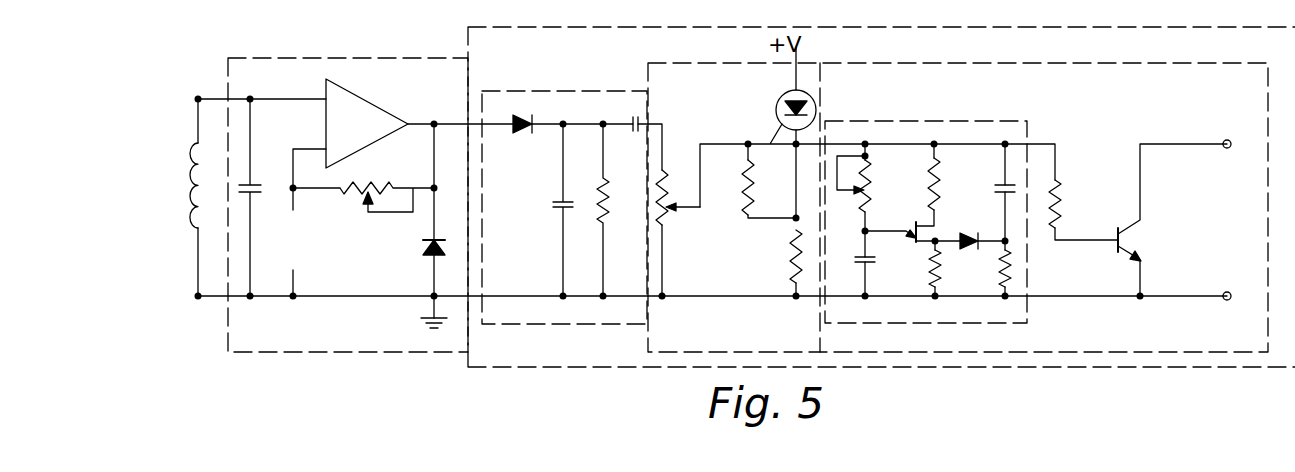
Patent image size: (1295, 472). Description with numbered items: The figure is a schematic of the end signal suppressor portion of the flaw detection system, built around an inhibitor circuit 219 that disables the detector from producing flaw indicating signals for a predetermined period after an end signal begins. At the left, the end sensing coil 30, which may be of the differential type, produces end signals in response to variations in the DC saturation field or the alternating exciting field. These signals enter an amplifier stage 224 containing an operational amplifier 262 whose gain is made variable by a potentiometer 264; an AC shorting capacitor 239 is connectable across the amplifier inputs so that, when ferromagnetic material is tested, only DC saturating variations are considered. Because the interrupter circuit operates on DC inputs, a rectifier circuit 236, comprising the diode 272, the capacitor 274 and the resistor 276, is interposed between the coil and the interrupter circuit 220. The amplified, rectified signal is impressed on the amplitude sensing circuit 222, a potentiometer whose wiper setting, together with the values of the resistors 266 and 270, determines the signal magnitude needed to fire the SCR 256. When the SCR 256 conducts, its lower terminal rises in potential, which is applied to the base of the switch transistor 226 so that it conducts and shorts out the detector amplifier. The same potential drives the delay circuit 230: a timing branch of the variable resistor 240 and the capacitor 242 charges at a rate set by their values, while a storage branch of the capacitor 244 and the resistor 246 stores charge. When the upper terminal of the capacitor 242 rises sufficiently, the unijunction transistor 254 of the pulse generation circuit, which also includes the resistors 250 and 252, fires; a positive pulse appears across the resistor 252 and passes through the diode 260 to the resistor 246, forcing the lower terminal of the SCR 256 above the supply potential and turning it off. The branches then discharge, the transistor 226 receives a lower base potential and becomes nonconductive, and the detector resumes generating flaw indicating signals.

The end sensing coil 30 is at (190, 190).
The inhibitor circuit 219 is at (1028, 27).
The interrupter circuit 220 is at (1060, 352).
The amplitude sensing circuit 222 is at (670, 188).
The amplifier stage 224 is at (330, 58).
The switch 226 is at (1138, 230).
The delay circuit 230 is at (940, 121).
The rectifier circuit 236 is at (548, 91).
The AC shorting capacitor 239 is at (264, 184).
The variable resistor 240 is at (870, 182).
The capacitor 242 is at (873, 260).
The capacitor 244 is at (998, 188).
The resistor 246 is at (1012, 262).
The resistor 250 is at (932, 190).
The resistor 252 is at (944, 282).
The unijunction transistor 254 is at (924, 232).
The SCR 256 is at (816, 106).
The diode 260 is at (968, 247).
The operational amplifier 262 is at (370, 100).
The potentiometer 264 is at (366, 184).
The resistor 266 is at (746, 196).
The resistor 270 is at (790, 262).
The diode 272 is at (523, 130).
The capacitor 274 is at (556, 206).
The resistor 276 is at (610, 210).